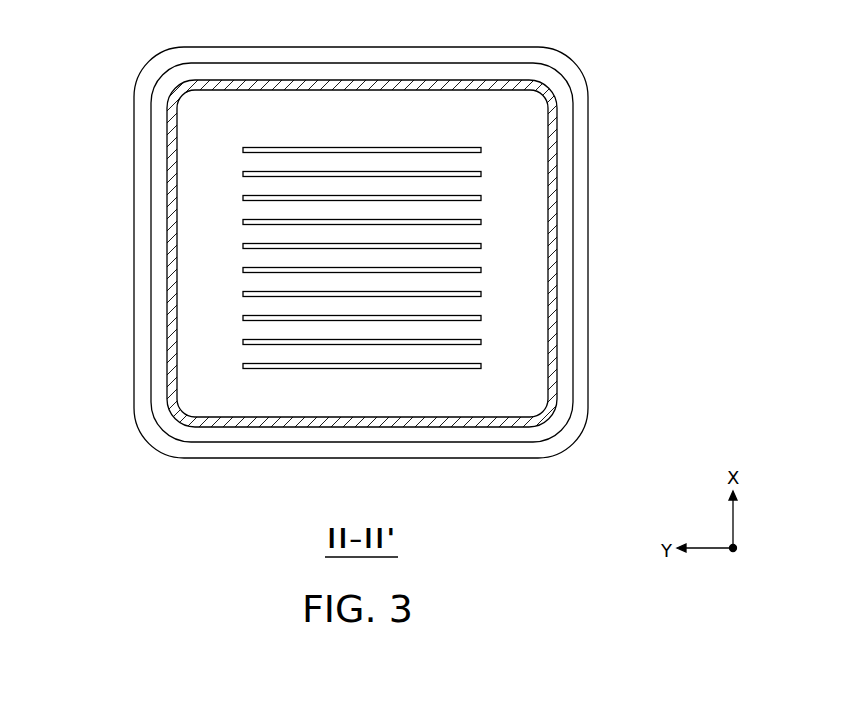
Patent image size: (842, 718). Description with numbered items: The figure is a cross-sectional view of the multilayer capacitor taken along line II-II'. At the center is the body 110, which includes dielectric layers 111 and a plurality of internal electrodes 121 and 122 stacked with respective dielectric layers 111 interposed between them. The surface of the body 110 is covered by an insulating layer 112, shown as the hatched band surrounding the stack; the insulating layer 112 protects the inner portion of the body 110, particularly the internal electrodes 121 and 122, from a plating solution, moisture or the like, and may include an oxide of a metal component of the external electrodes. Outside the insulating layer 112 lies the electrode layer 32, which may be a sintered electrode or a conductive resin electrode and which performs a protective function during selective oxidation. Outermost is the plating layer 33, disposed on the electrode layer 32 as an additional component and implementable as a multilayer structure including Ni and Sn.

The body 110 is at (470, 88).
The dielectric layers 111 is at (313, 163).
The insulating layer 112 is at (171, 233).
The internal electrode 121 is at (360, 147).
The internal electrode 122 is at (427, 172).
The electrode layer 32 is at (158, 270).
The plating layer 33 is at (140, 320).